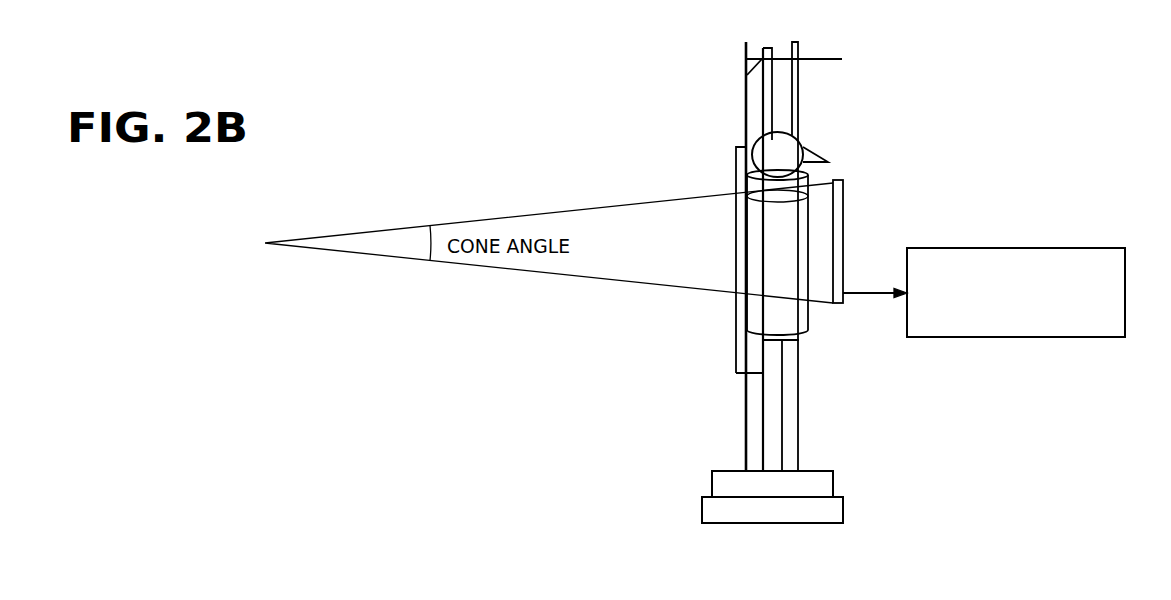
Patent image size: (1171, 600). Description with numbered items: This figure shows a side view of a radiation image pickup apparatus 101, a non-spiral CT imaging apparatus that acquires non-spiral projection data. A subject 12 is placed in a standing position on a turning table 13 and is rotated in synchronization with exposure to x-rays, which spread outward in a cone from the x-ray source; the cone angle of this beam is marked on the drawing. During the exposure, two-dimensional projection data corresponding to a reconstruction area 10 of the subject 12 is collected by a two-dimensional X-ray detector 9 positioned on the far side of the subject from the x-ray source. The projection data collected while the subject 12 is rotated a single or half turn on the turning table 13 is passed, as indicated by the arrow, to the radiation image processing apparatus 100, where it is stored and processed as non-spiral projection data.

The radiation image pickup apparatus 101 is at (701, 128).
The subject 12 is at (813, 152).
The reconstruction area 10 is at (807, 213).
The two-dimensional X-ray detector 9 is at (845, 243).
The turning table 13 is at (817, 470).
The radiation image processing apparatus 100 is at (1017, 337).